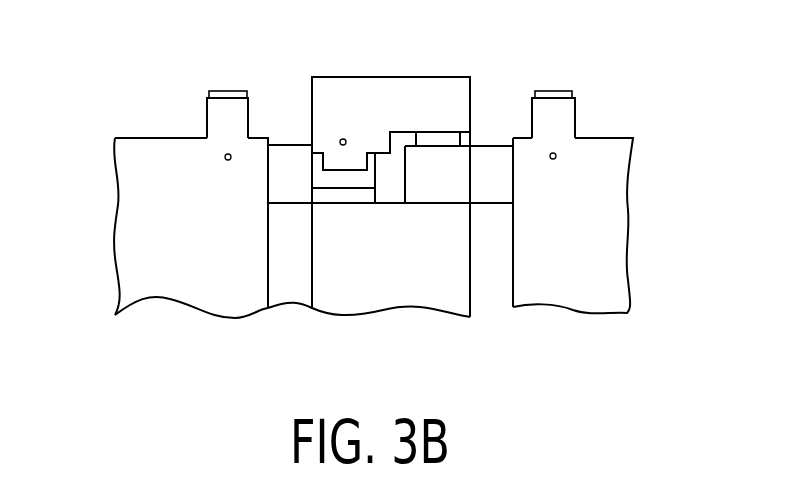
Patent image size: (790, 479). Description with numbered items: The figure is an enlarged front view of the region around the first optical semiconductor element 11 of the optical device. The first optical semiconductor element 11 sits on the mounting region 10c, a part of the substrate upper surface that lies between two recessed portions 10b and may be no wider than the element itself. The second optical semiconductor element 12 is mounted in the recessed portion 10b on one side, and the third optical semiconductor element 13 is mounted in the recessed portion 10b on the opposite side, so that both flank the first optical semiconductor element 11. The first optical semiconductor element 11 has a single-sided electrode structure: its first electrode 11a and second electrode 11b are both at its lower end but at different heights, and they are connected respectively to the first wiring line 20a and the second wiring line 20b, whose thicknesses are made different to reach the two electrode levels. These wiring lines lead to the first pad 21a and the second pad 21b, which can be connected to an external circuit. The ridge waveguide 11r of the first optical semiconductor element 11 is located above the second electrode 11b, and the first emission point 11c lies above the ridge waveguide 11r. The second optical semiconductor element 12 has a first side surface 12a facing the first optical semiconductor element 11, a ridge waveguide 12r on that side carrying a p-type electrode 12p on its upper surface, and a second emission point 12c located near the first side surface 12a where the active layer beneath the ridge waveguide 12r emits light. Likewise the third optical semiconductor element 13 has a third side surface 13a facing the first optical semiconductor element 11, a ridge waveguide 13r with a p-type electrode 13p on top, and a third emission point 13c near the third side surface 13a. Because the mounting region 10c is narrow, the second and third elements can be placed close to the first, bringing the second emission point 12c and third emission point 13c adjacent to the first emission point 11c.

The recessed portion 10b is at (295, 247).
The mounting region 10c is at (390, 205).
The first optical semiconductor element 11 is at (378, 102).
The first electrode 11a is at (442, 140).
The second electrode 11b is at (330, 180).
The first emission point 11c is at (342, 139).
The ridge waveguide 11r is at (367, 160).
The second optical semiconductor element 12 is at (183, 265).
The first side surface 12a is at (270, 267).
The second emission point 12c is at (225, 156).
The p-type electrode 12p is at (228, 92).
The ridge waveguide 12r is at (206, 124).
The third optical semiconductor element 13 is at (583, 268).
The third side surface 13a is at (513, 268).
The third emission point 13c is at (555, 153).
The p-type electrode 13p is at (563, 92).
The ridge waveguide 13r is at (577, 103).
The first wiring line 20a is at (442, 183).
The second wiring line 20b is at (335, 195).
The first pad 21a is at (478, 160).
The second pad 21b is at (302, 150).